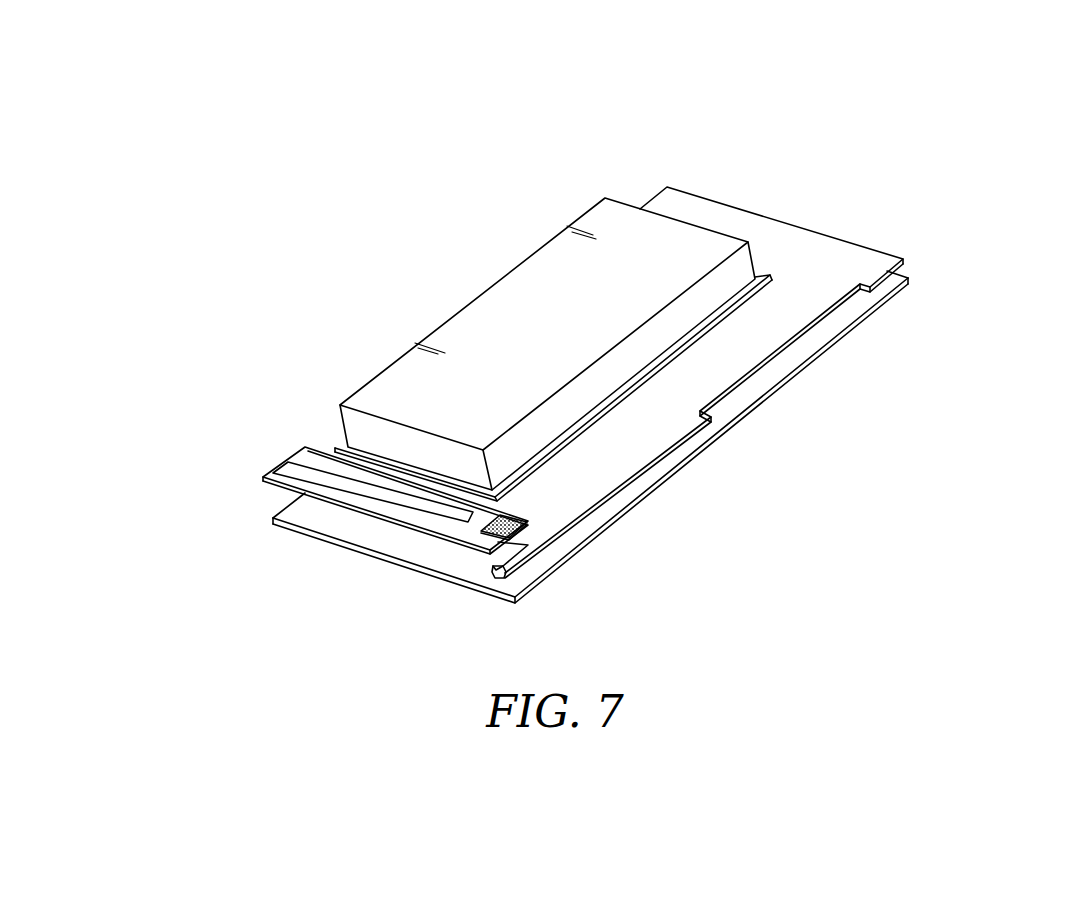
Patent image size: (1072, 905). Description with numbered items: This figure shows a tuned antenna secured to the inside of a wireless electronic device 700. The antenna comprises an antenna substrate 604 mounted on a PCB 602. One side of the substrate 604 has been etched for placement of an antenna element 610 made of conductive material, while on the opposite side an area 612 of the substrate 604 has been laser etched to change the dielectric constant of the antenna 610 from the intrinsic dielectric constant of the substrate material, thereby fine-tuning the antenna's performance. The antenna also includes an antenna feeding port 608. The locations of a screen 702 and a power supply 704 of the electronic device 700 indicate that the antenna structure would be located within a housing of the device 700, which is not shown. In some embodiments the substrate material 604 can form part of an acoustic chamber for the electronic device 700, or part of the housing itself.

The wireless electronic device 700 is at (980, 117).
The screen 702 is at (803, 348).
The PCB 602 is at (850, 247).
The power supply 704 is at (513, 322).
The antenna element 610 is at (267, 475).
The antenna substrate 604 is at (305, 446).
The laser etched area 612 is at (527, 516).
The antenna feeding port 608 is at (498, 570).